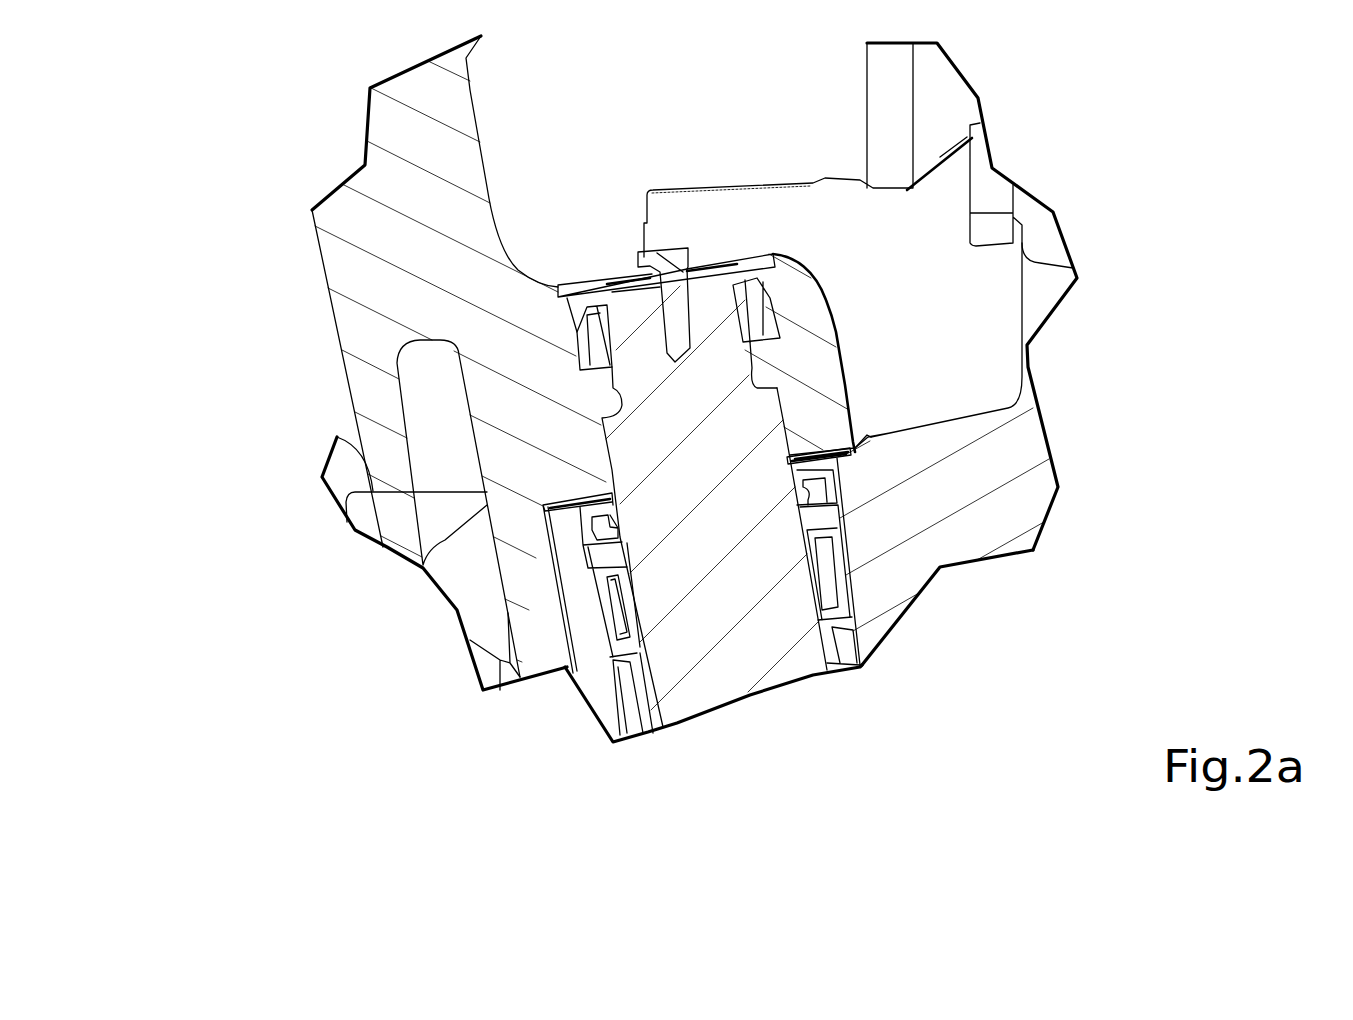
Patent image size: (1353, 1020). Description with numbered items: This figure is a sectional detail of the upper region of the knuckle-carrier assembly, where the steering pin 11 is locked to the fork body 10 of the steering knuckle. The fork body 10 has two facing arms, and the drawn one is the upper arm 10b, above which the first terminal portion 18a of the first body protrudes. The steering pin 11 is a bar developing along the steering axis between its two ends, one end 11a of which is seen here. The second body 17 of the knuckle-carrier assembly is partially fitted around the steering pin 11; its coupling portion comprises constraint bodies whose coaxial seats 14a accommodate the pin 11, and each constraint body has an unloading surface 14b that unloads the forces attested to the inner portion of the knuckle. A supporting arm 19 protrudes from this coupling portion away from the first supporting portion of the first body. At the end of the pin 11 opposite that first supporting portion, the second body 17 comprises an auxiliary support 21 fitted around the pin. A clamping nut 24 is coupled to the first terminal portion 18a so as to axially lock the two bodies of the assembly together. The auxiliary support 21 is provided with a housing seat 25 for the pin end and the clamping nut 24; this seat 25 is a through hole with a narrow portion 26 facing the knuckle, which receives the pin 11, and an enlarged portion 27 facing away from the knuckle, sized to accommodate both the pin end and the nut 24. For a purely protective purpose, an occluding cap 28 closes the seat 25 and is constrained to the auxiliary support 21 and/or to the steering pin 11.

The fork body 10 is at (950, 484).
The upper arm 10b is at (898, 573).
The steering pin 11 is at (725, 550).
The end of the pin 11a is at (632, 313).
The seat 14a is at (607, 388).
The unloading surface 14b is at (602, 484).
The second body 17 is at (318, 284).
The first terminal portion 18a is at (713, 297).
The supporting arm 19 is at (375, 242).
The auxiliary support 21 is at (830, 313).
The clamping nut 24 is at (587, 343).
The housing seat 25 is at (758, 250).
The narrow portion 26 is at (757, 382).
The enlarged portion 27 is at (767, 278).
The occluding cap 28 is at (593, 278).